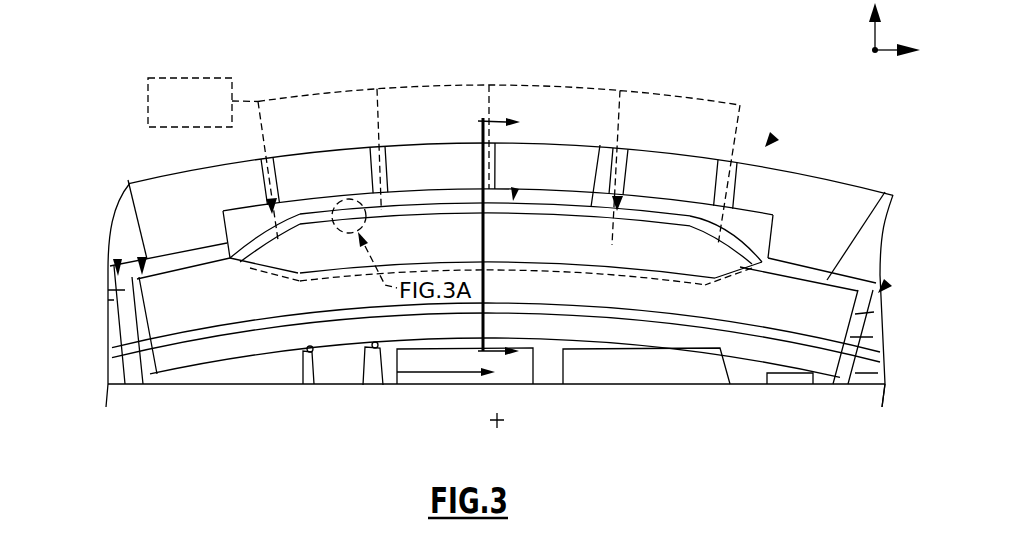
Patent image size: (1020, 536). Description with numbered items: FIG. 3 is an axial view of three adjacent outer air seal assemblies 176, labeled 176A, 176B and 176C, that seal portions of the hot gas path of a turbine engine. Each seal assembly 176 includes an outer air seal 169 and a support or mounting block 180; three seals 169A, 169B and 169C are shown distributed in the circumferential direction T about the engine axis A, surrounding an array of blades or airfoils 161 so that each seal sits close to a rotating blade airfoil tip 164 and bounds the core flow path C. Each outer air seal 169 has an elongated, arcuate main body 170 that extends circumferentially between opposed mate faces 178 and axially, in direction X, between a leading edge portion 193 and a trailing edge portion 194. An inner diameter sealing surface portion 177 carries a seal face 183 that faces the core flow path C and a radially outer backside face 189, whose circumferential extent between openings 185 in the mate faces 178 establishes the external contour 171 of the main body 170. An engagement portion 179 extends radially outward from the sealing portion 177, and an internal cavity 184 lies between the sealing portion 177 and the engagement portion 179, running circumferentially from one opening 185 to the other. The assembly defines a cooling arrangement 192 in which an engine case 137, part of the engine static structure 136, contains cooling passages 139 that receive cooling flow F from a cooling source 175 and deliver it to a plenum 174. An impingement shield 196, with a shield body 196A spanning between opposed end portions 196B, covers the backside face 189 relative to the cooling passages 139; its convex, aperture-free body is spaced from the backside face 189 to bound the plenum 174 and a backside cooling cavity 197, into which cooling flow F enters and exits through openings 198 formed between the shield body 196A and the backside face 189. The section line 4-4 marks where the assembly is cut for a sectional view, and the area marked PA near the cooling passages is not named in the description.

The outer air seal assembly 176 is at (501, 228).
The outer air seal assembly 176A is at (501, 293).
The outer air seal assembly 176B is at (113, 209).
The outer air seal assembly 176C is at (883, 283).
The cooling source 175 is at (213, 114).
The engine static structure 136 is at (511, 166).
The engine case 137 is at (144, 184).
The cooling passages 139 is at (369, 146).
The passage PA is at (365, 160).
The mounting block 180 is at (214, 253).
The engagement portion 179 is at (208, 282).
The cooling flow F is at (262, 199).
The mate faces 178 is at (110, 292).
The openings 185 is at (126, 308).
The openings 198 is at (318, 242).
The impingement shield 196 is at (514, 190).
The shield body 196A is at (600, 145).
The end portions 196B is at (268, 278).
The backside cooling cavity 197 is at (455, 247).
The plenum 174 is at (410, 199).
The line 4- 4 is at (490, 238).
The external contour 171 is at (520, 262).
The internal cavity 184 is at (577, 273).
The backside face 189 is at (648, 270).
The cooling arrangement 192 is at (772, 136).
The leading edge portion 193 is at (835, 213).
The trailing edge portion 194 is at (885, 192).
The main body 170 is at (786, 255).
The outer air seal 169 is at (496, 378).
The outer air seal 169A is at (496, 361).
The outer air seal 169B is at (124, 386).
The outer air seal 169C is at (873, 335).
The rotating blade airfoil tip 164 is at (308, 353).
The blades 161 is at (335, 368).
The core flow path C is at (447, 373).
The engine axis A is at (500, 423).
The inner diameter sealing surface portion 177 is at (720, 349).
The seal face 183 is at (813, 377).
The circumferential direction T is at (907, 51).
The axial direction X is at (873, 50).